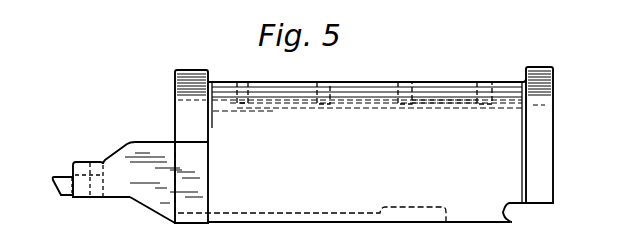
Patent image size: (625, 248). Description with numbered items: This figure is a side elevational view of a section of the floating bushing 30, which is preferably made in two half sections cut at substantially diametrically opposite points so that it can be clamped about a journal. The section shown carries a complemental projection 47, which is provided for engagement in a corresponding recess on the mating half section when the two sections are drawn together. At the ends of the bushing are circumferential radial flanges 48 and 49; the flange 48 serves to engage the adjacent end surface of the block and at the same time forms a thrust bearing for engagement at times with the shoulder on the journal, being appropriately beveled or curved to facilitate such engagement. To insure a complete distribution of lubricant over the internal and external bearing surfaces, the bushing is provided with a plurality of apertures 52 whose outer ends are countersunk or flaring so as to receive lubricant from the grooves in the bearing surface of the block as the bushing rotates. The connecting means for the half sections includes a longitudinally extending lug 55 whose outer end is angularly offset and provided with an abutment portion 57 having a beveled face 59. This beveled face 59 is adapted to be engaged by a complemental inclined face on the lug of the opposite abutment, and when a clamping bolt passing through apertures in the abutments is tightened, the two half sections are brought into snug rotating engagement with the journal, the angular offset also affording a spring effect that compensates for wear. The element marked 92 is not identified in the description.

The floating bushing 30 is at (512, 152).
The complemental projection 47 is at (512, 222).
The circumferential radial flange 48 is at (553, 100).
The circumferential radial flange 49 is at (175, 95).
The apertures 52 is at (402, 85).
The lining 92 is at (431, 113).
The longitudinally extending lug 55 is at (156, 198).
The abutment portion 57 is at (72, 193).
The beveled face 59 is at (57, 191).